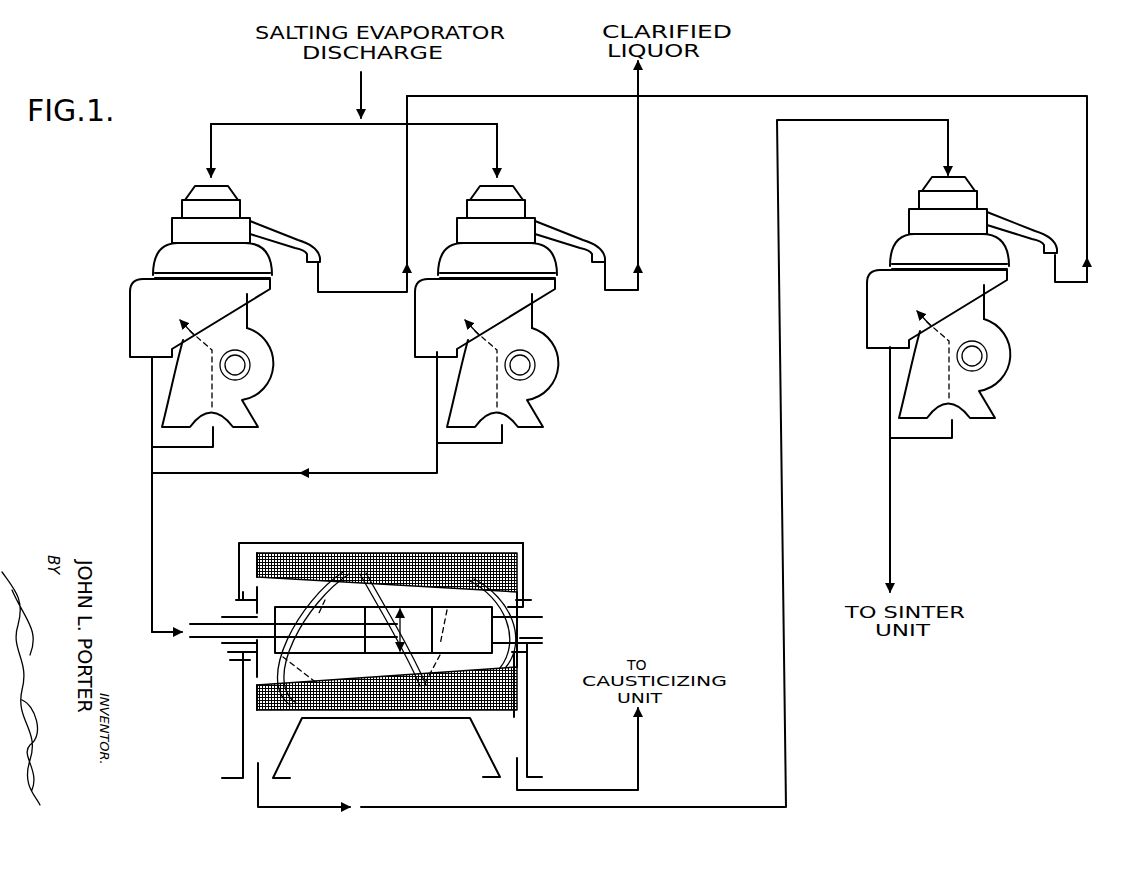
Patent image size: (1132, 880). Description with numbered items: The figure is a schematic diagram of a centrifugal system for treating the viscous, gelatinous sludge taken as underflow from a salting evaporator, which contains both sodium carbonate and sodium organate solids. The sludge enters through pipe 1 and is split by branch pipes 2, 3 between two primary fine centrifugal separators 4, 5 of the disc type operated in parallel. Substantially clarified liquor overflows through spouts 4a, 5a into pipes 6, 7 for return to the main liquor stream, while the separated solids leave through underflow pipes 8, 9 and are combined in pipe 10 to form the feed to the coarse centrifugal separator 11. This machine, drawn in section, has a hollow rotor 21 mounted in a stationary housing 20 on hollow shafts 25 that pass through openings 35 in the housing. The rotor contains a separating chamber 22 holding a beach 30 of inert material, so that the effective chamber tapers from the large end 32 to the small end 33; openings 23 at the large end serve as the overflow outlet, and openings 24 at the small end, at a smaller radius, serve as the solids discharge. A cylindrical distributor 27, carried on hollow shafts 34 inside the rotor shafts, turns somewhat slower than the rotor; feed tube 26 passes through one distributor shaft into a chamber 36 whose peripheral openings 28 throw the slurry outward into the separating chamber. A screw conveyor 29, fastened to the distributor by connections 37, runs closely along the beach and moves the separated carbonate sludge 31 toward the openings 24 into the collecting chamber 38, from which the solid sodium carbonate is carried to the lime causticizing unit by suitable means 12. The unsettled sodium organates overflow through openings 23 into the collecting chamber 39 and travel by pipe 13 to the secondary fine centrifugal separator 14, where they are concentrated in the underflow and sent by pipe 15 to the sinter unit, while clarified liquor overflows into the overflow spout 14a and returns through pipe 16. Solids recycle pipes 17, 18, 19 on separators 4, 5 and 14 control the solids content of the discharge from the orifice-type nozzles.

The pipe 1 is at (356, 119).
The branch pipe 2 is at (262, 126).
The branch pipe 3 is at (442, 126).
The fine centrifugal separator 4 is at (153, 257).
The spout 4a is at (296, 237).
The fine centrifugal separator 5 is at (510, 306).
The spout 5a is at (570, 233).
The pipe 6 is at (405, 195).
The pipe 7 is at (641, 205).
The underflow pipe 8 is at (150, 420).
The underflow pipe 9 is at (435, 402).
The pipe 10 is at (150, 557).
The coarse centrifugal separator 11 is at (232, 712).
The suitable means 12 is at (571, 790).
The pipe 13 is at (782, 470).
The fine centrifugal separator 14 is at (954, 297).
The overflow spout 14a is at (1022, 225).
The pipe 15 is at (888, 395).
The pipe 16 is at (1089, 185).
The solids recycle pipe 17 is at (214, 440).
The solids recycle pipe 18 is at (503, 435).
The solids recycle pipe 19 is at (954, 428).
The stationary housing 20 is at (435, 543).
The hollow rotor 21 is at (353, 553).
The centrifugal separating chamber 22 is at (298, 578).
The openings 23 is at (238, 681).
The openings 24 is at (535, 657).
The hollow shafts 25 is at (230, 603).
The feed tube 26 is at (192, 640).
The cylindrical distributor 27 is at (303, 607).
The peripheral openings 28 is at (400, 606).
The conveyor 29 is at (312, 658).
The beach 30 is at (480, 560).
The carbonate sludge 31 is at (525, 556).
The large end 32 is at (248, 545).
The small end 33 is at (530, 590).
The hollow shafts 34 is at (222, 617).
The openings 35 is at (240, 592).
The chamber 36 is at (418, 613).
The connections 37 is at (440, 655).
The collecting chamber 38 is at (532, 727).
The collecting chamber 39 is at (235, 752).